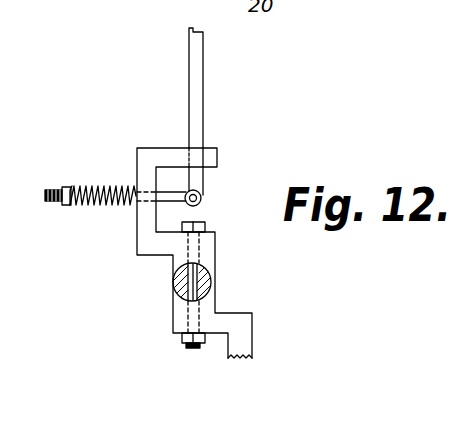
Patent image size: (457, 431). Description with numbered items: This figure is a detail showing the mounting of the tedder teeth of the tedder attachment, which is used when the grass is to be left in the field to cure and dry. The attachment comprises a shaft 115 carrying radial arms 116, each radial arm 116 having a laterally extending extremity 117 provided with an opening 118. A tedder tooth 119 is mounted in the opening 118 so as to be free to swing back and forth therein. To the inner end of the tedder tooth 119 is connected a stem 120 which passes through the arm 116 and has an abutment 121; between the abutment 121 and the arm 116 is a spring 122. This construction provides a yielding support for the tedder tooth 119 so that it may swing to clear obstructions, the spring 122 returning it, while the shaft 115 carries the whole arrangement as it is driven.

The shaft 115 is at (211, 273).
The radial arm 116 is at (137, 155).
The laterally extending extremity 117 is at (217, 155).
The opening 118 is at (205, 148).
The tedder tooth 119 is at (189, 82).
The stem 120 is at (175, 207).
The abutment 121 is at (66, 207).
The spring 122 is at (104, 206).